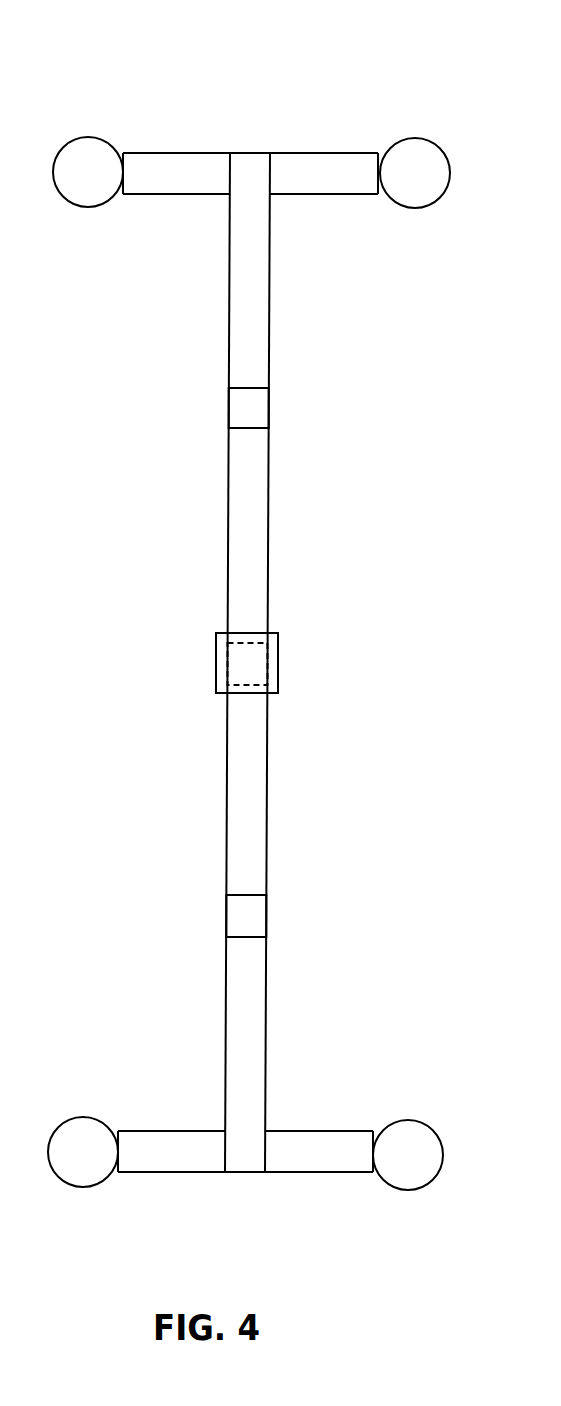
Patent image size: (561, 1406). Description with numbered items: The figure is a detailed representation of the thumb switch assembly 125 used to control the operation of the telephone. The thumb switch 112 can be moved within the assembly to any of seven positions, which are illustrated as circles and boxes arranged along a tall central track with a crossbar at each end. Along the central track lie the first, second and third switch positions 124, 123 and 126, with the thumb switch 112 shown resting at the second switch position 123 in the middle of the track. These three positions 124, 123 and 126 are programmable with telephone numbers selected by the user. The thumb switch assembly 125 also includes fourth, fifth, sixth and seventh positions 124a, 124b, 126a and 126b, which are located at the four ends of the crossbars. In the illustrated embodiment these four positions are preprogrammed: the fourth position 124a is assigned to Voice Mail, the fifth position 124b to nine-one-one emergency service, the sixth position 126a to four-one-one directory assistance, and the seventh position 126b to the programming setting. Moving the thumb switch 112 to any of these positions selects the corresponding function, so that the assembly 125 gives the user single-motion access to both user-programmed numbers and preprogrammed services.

The thumb switch assembly 125 is at (198, 109).
The sixth position 126a is at (88, 206).
The seventh position 126b is at (417, 208).
The first switch position 124 is at (270, 410).
The thumb switch 112 is at (216, 665).
The second switch position 123 is at (278, 665).
The third switch position 126 is at (267, 916).
The fourth position 124a is at (80, 1187).
The fifth position 124b is at (405, 1189).